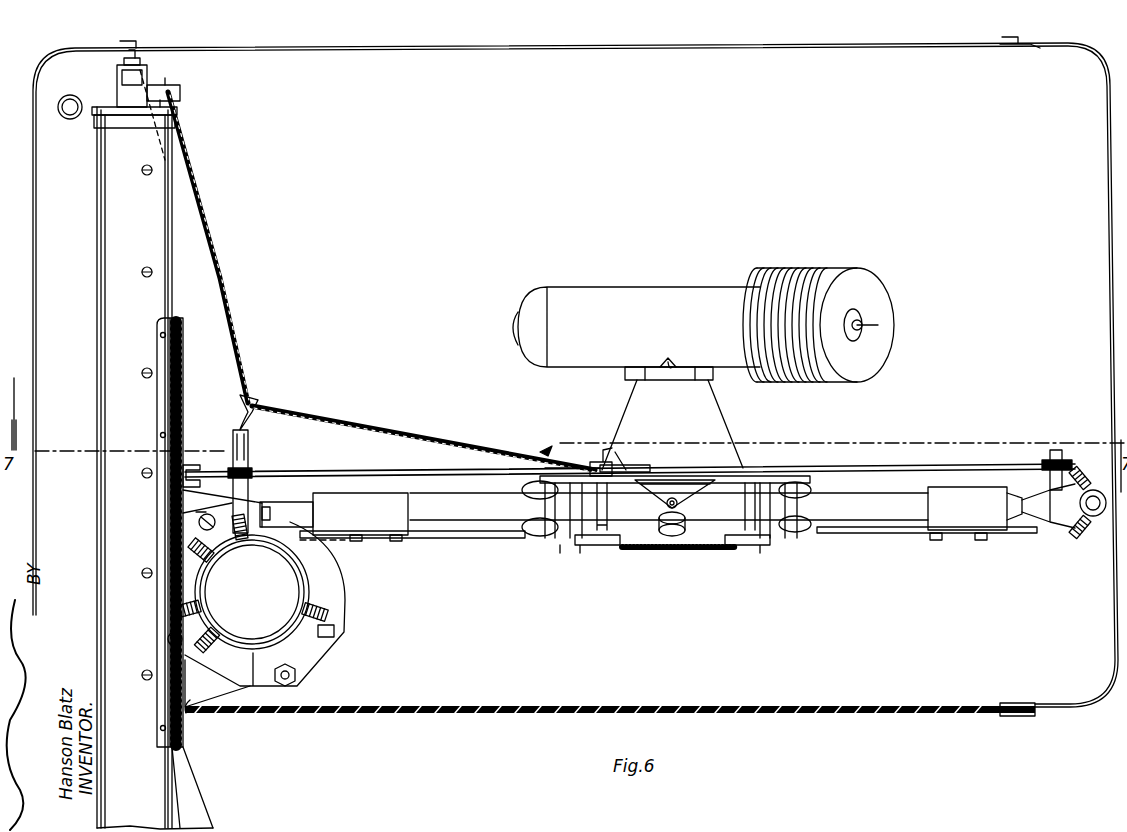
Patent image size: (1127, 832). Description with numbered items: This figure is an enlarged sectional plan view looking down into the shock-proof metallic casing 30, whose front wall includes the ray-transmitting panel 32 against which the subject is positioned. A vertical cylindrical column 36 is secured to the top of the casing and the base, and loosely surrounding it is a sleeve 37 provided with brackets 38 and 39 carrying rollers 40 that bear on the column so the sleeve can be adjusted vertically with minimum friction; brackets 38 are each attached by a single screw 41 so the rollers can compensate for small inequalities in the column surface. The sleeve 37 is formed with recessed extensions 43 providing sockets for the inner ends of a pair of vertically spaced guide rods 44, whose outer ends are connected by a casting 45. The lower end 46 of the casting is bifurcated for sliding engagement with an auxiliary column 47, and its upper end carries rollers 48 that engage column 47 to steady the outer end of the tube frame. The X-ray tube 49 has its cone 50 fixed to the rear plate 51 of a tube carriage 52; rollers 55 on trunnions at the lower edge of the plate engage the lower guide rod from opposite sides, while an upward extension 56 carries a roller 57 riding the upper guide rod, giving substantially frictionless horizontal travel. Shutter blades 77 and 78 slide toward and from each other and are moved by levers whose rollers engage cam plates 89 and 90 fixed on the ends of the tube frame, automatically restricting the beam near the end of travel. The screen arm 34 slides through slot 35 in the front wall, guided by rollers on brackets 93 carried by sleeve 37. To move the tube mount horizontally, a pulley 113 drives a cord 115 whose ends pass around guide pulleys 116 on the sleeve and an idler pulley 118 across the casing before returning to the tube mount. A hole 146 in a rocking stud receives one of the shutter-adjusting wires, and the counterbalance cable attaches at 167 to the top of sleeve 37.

The casing 30 is at (33, 290).
The panel 32 is at (458, 714).
The arm 34 is at (97, 285).
The slot 35 is at (190, 720).
The column 36 is at (296, 588).
The sleeve 37 is at (340, 590).
The bracket 38 is at (200, 525).
The bracket 39 is at (335, 633).
The roller 40 is at (243, 545).
The screw 41 is at (196, 512).
The recessed extension 43 is at (334, 517).
The guide rod 44 is at (903, 515).
The casting 45 is at (1048, 506).
The lower end 46 is at (1074, 538).
The auxiliary column 47 is at (1098, 518).
The roller 48 is at (1083, 470).
The X-ray tube 49 is at (680, 295).
The cone 50 is at (718, 428).
The rear plate 51 is at (612, 470).
The tube carriage 52 is at (826, 485).
The roller 55 is at (535, 480).
The upward extension 56 is at (675, 494).
The roller 57 is at (675, 550).
The blade 77 is at (612, 548).
The blade 78 is at (748, 548).
The cam plate 89 is at (476, 536).
The cam plate 90 is at (1010, 534).
The bracket 93 is at (190, 500).
The pulley 113 is at (190, 465).
The cord 115 is at (370, 474).
The guide pulley 116 is at (252, 474).
The idler pulley 118 is at (1048, 462).
The hole 146 is at (252, 405).
The attachment 167 is at (300, 674).